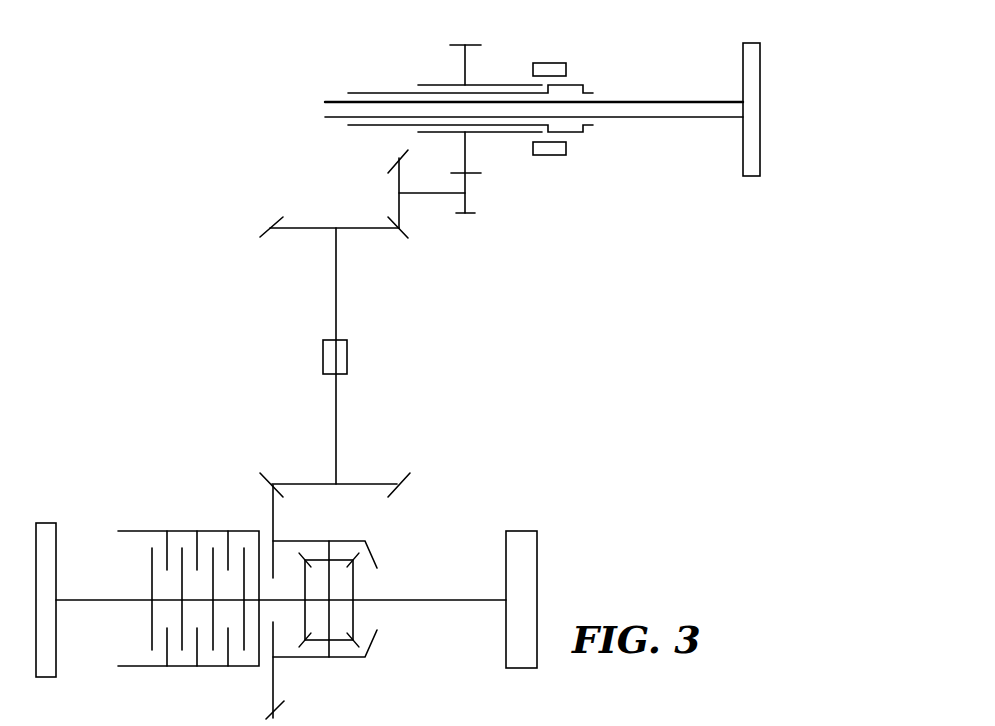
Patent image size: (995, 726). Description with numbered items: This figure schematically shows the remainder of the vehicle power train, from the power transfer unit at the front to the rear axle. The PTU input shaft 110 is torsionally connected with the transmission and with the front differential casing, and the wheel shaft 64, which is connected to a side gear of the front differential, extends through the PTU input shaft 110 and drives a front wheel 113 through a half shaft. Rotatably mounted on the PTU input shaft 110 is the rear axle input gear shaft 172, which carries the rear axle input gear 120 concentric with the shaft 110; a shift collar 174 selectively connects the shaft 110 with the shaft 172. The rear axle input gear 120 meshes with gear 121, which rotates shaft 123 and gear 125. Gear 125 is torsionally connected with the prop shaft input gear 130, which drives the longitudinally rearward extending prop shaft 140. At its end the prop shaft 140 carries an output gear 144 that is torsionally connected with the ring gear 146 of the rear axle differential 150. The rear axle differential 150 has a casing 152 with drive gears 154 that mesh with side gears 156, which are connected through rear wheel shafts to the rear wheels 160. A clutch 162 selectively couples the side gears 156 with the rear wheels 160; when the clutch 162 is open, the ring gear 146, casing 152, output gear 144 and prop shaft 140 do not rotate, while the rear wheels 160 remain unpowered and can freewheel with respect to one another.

The wheel shaft 64 is at (638, 101).
The wheel 113 is at (762, 153).
The PTU input shaft 110 is at (376, 92).
The rear axle input gear shaft 172 is at (500, 85).
The rear axle input gear 120 is at (464, 67).
The shift collar 174 is at (540, 63).
The gear 121 is at (468, 188).
The shaft 123 is at (427, 196).
The gear 125 is at (393, 166).
The prop shaft input gear 130 is at (296, 235).
The prop shaft 140 is at (337, 415).
The output gear 144 is at (366, 486).
The ring gear 146 is at (271, 686).
The casing 152 is at (372, 553).
The drive gears 154 is at (337, 640).
The side gears 156 is at (354, 584).
The rear wheels 160 is at (42, 522).
The rear axle differential 150 is at (179, 556).
The clutch 162 is at (147, 531).